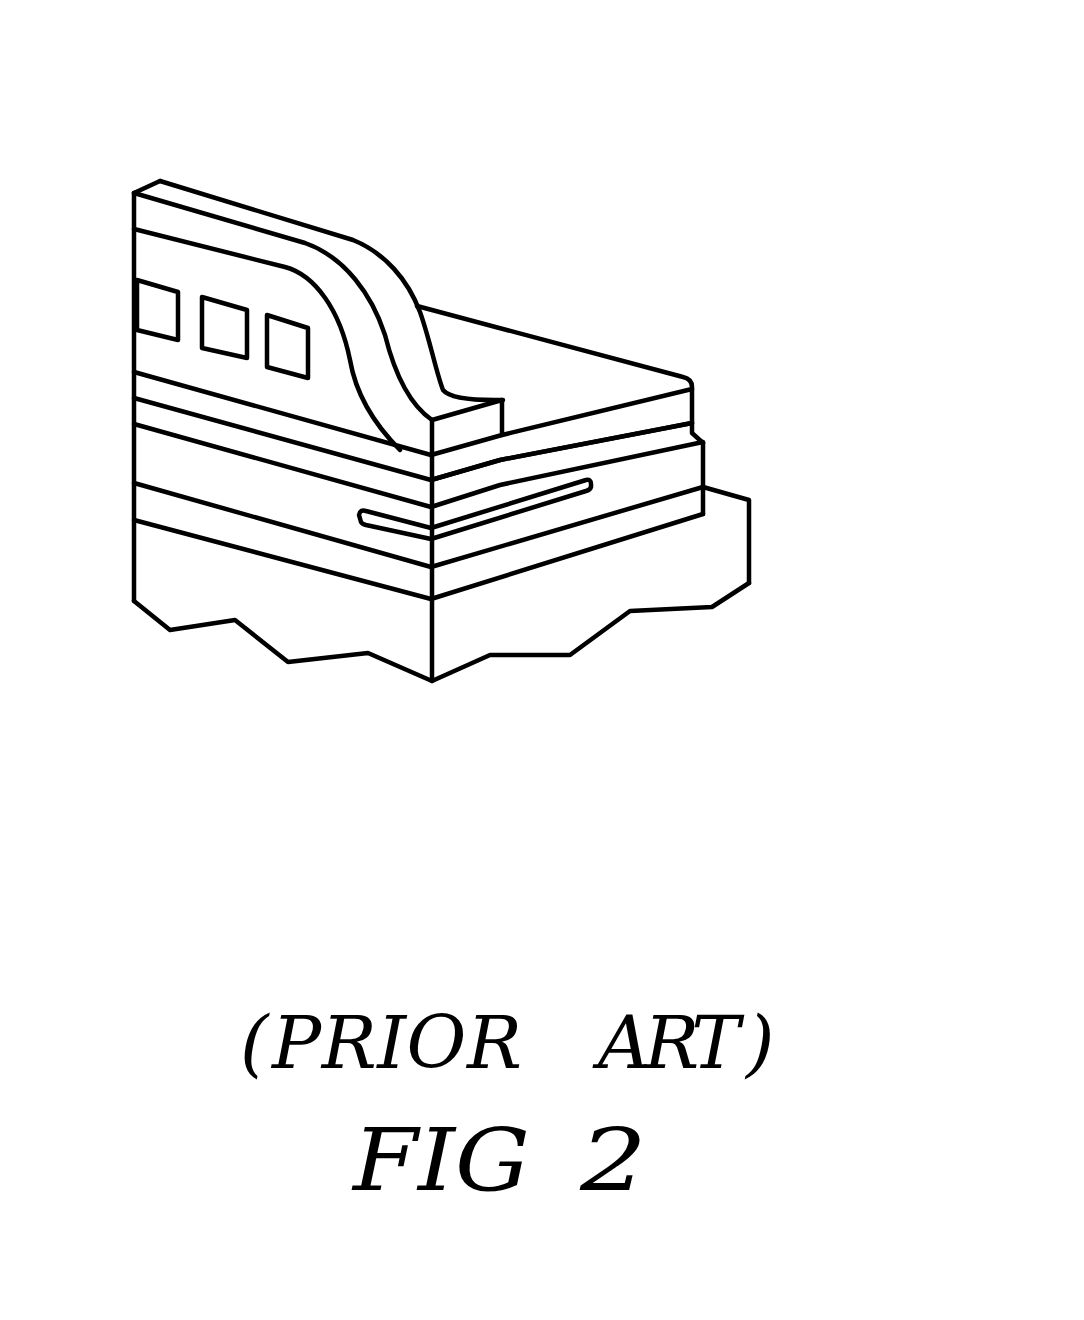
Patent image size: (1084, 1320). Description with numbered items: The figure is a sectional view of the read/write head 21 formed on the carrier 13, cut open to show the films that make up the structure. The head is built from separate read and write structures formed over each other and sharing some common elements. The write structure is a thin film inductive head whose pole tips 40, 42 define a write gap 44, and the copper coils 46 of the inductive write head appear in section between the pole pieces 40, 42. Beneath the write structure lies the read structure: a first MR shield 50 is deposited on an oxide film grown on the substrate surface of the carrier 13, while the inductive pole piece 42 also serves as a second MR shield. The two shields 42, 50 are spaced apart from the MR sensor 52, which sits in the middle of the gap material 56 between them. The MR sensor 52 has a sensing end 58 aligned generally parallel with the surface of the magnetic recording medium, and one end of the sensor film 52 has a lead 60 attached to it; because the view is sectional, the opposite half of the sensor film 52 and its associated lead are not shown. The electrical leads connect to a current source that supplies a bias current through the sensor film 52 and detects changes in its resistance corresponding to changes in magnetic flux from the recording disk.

The read/write head 21 is at (491, 394).
The copper coils 46 is at (288, 334).
The pole tip 40 is at (467, 427).
The write gap 44 is at (540, 436).
The pole tip 42 is at (617, 438).
The lead 60 is at (667, 456).
The carrier 13 is at (732, 537).
The gap material 56 is at (182, 477).
The first MR shield 50 is at (283, 542).
The MR sensor 52 is at (387, 523).
The sensing end 58 is at (465, 527).